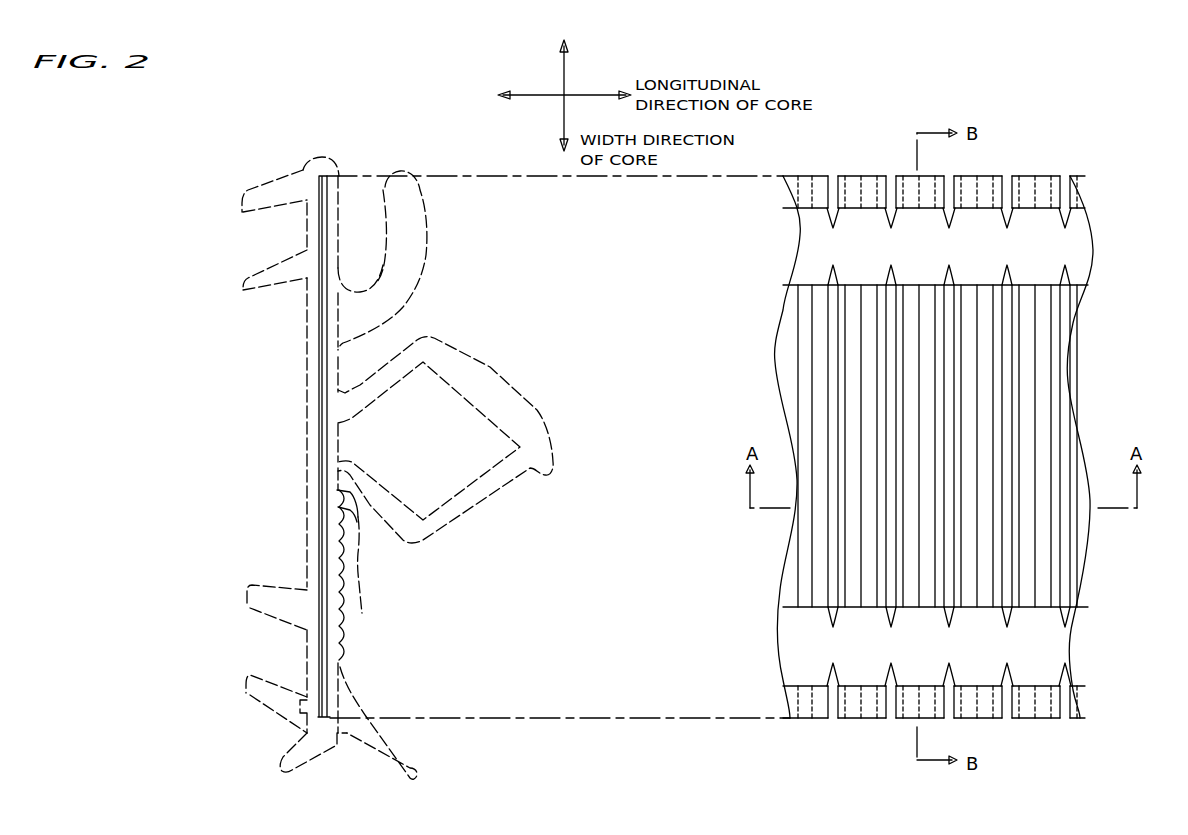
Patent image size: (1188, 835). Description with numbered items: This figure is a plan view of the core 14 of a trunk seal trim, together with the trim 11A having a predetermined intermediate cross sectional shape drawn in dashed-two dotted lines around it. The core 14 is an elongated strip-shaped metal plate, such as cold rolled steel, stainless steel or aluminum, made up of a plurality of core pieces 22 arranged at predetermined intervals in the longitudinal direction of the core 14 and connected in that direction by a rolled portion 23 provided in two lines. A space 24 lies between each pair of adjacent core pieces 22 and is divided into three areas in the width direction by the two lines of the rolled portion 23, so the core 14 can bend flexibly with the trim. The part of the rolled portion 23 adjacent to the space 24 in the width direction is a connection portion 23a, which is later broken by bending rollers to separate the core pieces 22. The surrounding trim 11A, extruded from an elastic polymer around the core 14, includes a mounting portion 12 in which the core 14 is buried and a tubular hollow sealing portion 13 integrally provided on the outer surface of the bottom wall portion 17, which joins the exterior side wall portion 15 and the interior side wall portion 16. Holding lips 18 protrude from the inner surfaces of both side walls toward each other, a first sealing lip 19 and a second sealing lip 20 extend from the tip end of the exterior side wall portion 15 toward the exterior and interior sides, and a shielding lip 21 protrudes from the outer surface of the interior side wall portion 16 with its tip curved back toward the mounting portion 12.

The trim having an intermediate cross sectional shape 11A is at (418, 308).
The mounting portion 12 is at (358, 572).
The tubular hollow sealing portion 13 is at (493, 378).
The core 14 is at (332, 666).
The exterior side wall portion 15 is at (360, 600).
The interior side wall portion 16 is at (338, 270).
The bottom wall portion 17 is at (360, 540).
The holding lips 18 is at (243, 212).
The first sealing lip 19 is at (412, 774).
The second sealing lip 20 is at (282, 771).
The shielding lip 21 is at (427, 240).
The core pieces 22 is at (1058, 335).
The rolled portion 23 is at (1050, 243).
The connection portion 23a is at (1007, 243).
The space 24 is at (1008, 180).